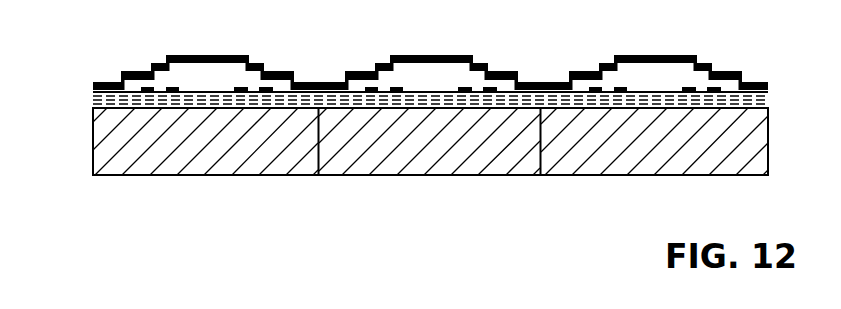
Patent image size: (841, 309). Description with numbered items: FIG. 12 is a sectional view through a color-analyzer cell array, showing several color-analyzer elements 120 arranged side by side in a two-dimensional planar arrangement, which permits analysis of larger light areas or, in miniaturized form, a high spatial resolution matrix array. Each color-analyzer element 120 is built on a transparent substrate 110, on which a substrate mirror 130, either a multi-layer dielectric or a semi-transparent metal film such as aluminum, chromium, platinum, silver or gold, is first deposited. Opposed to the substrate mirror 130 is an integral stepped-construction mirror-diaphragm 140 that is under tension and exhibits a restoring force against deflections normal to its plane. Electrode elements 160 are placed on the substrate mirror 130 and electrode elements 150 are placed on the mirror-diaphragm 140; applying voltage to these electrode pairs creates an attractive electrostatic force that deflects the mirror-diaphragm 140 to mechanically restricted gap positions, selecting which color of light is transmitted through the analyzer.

The transparent substrate 110 is at (603, 171).
The color-analyzer element 120 is at (145, 228).
The substrate mirror 130 is at (91, 101).
The mirror-diaphragm 140 is at (133, 73).
The electrode elements 150 is at (183, 56).
The electrode elements 160 is at (265, 66).